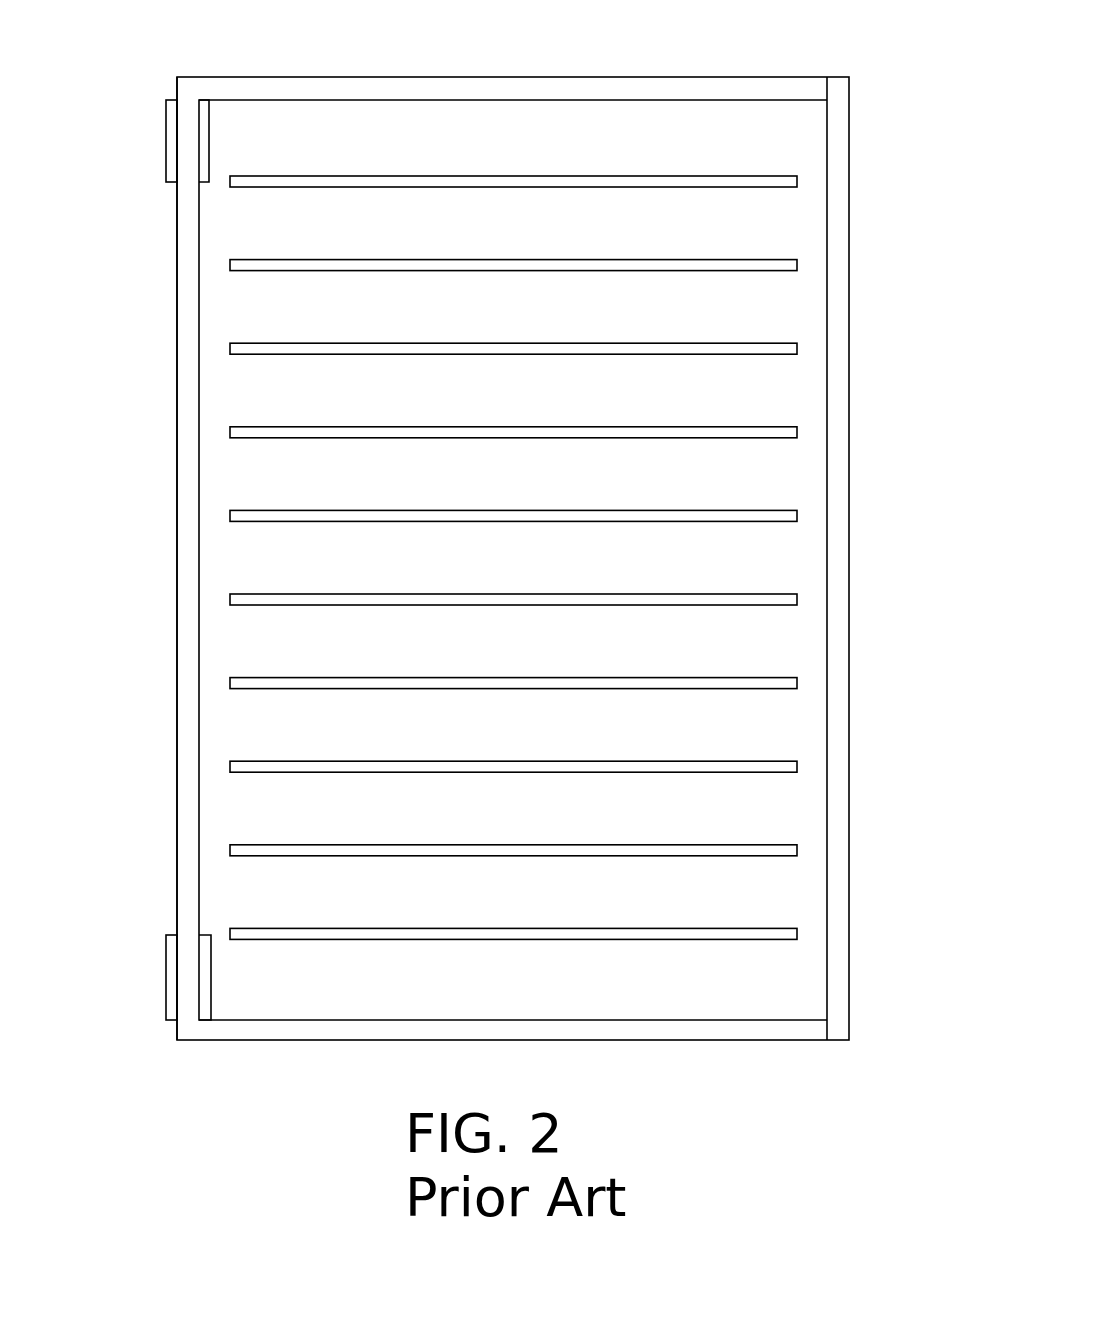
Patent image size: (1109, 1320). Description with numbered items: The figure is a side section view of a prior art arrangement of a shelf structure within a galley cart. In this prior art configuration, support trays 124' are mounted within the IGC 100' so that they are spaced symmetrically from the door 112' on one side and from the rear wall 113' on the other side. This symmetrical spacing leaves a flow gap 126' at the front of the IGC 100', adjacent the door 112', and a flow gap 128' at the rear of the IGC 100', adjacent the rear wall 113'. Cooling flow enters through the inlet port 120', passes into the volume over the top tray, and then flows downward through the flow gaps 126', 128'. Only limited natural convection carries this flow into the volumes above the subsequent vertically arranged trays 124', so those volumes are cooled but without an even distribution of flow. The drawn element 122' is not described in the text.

The IGC 100' is at (513, 528).
The door 112' is at (892, 558).
The rear wall 113' is at (118, 558).
The inlet port 120' is at (125, 141).
The lower connecting tab 122' is at (126, 971).
The support trays 124' is at (594, 383).
The flow gap 126' is at (597, 235).
The flow gap 128' is at (438, 560).